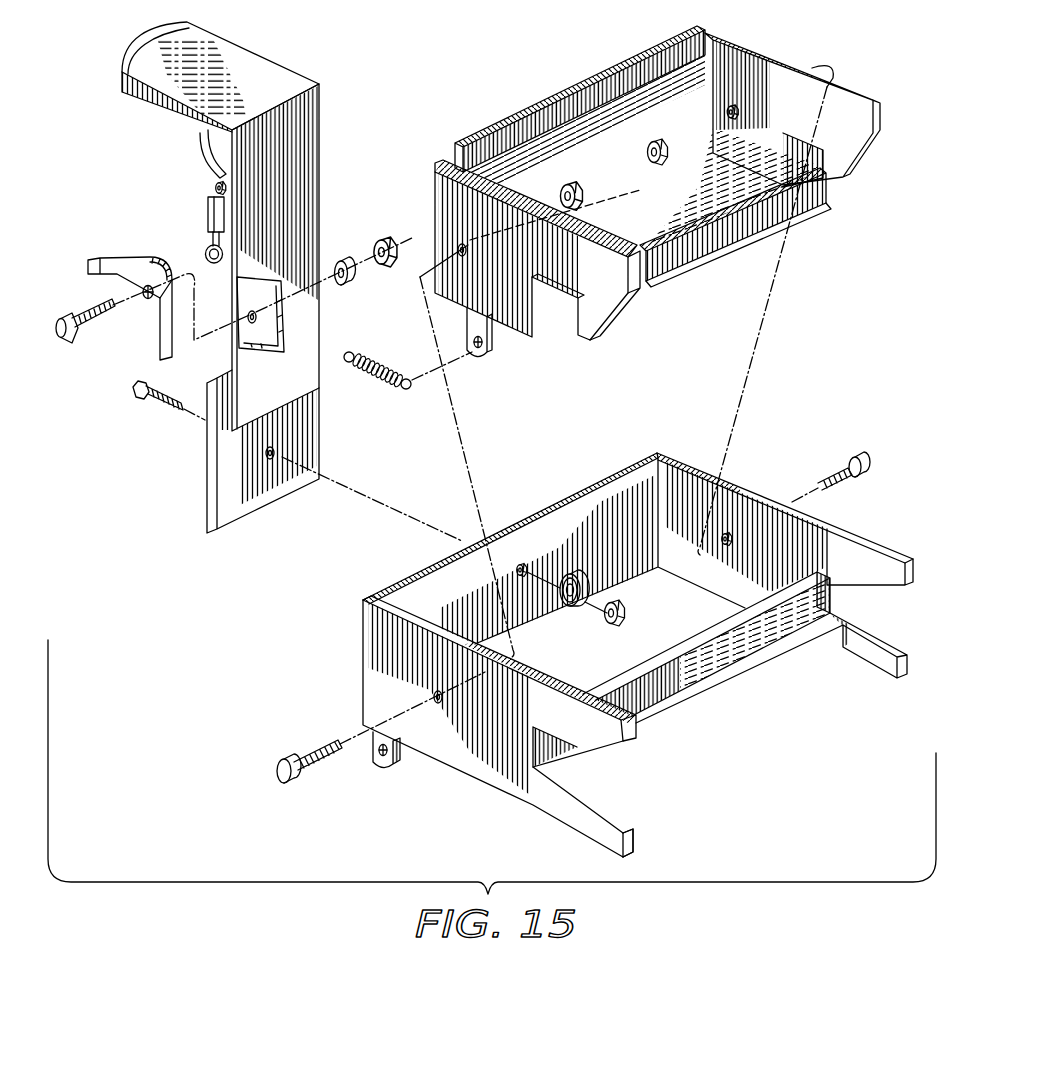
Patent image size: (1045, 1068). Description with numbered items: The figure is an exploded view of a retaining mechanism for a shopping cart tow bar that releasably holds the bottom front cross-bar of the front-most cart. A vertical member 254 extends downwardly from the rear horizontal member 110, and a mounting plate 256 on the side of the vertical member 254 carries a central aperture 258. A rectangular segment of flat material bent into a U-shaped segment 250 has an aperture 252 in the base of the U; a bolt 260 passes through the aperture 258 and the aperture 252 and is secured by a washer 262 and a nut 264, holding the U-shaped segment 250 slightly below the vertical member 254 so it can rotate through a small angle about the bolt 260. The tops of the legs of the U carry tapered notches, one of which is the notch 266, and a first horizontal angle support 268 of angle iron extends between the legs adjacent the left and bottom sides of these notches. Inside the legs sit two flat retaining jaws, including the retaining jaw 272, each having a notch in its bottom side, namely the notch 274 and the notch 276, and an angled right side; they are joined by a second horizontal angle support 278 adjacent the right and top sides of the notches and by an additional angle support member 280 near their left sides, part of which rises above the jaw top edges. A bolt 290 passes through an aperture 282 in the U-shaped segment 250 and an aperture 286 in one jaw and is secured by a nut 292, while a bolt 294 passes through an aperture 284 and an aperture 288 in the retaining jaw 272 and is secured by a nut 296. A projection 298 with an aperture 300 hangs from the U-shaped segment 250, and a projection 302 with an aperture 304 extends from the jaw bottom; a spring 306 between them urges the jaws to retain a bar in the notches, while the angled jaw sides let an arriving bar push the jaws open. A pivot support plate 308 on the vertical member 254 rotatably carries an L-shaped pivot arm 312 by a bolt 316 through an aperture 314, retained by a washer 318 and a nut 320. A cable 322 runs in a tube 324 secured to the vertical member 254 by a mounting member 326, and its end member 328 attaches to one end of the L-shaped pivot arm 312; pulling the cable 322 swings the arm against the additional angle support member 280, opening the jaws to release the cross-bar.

The rear horizontal member 110 is at (253, 70).
The vertical member 254 is at (302, 130).
The mounting plate 256 is at (253, 493).
The aperture 258 is at (280, 457).
The bolt 260 is at (165, 403).
The tube 324 is at (203, 140).
The mounting member 326 is at (215, 187).
The cable 322 is at (208, 217).
The end member 328 is at (206, 253).
The aperture 314 is at (143, 288).
The L-shaped pivot arm 312 is at (161, 300).
The bolt 316 is at (64, 342).
The pivot support plate 308 is at (268, 333).
The washer 318 is at (344, 285).
The nut 320 is at (383, 267).
The spring 306 is at (358, 383).
The notch 274 is at (540, 323).
The aperture 286 is at (460, 246).
The projection 302 is at (490, 350).
The aperture 304 is at (468, 347).
The additional angle support member 280 is at (623, 87).
The retaining jaw 272 is at (758, 80).
The aperture 288 is at (738, 116).
The notch 276 is at (777, 226).
The second horizontal angle support 278 is at (703, 246).
The nut 292 is at (583, 198).
The nut 296 is at (664, 161).
The U-shaped segment 250 is at (365, 687).
The first horizontal angle support 268 is at (730, 682).
The notch 266 is at (845, 585).
The aperture 282 is at (447, 695).
The projection 298 is at (373, 752).
The aperture 300 is at (388, 758).
The bolt 290 is at (318, 743).
The nut 264 is at (623, 607).
The washer 262 is at (597, 563).
The aperture 252 is at (527, 566).
The aperture 284 is at (732, 540).
The bolt 294 is at (852, 477).